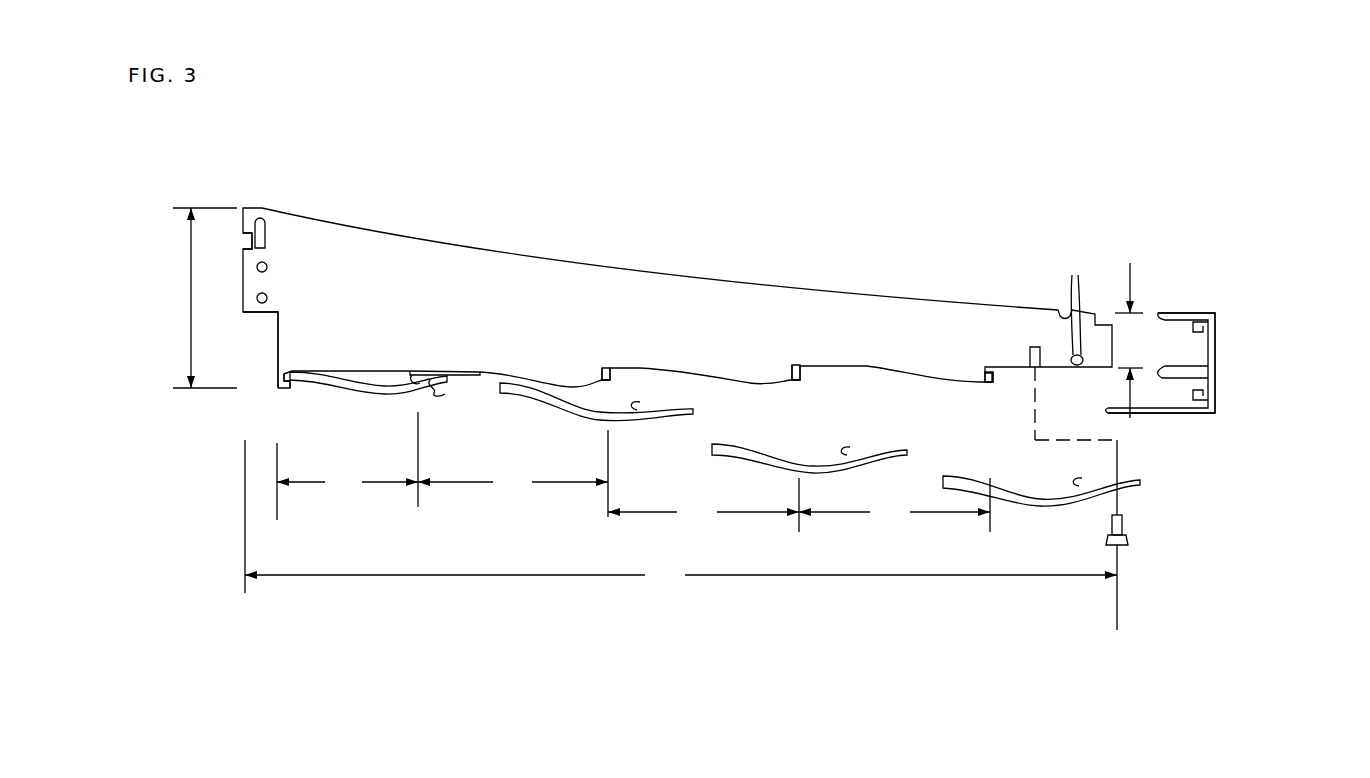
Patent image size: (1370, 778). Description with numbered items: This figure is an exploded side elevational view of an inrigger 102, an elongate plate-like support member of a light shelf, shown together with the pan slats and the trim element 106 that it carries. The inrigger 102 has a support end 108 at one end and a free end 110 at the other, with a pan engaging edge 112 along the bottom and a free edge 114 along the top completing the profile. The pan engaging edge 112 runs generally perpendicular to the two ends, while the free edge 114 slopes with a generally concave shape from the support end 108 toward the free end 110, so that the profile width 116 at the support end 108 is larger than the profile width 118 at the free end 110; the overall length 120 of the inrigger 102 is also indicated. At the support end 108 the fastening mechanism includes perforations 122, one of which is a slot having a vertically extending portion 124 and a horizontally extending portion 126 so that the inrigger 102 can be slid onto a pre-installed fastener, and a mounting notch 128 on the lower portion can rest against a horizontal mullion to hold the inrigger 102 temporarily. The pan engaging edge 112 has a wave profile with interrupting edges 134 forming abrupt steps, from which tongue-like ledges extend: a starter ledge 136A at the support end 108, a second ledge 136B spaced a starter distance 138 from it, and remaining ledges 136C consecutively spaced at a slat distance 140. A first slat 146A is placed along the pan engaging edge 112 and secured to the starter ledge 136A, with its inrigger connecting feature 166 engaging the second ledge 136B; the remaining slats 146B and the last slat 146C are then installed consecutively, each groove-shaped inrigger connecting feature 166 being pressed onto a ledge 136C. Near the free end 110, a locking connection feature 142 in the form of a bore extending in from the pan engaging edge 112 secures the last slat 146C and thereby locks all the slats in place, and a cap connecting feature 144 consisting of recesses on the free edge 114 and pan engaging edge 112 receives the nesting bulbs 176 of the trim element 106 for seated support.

The inrigger 102 is at (700, 170).
The trim element 106 is at (1243, 352).
The support end 108 is at (165, 297).
The free end 110 is at (1237, 297).
The pan engaging edge 112 is at (732, 388).
The free edge 114 is at (694, 278).
The profile width at the support end 116 is at (188, 333).
The profile width at the free end 118 is at (1130, 342).
The length 120 is at (681, 535).
The perforations 122 is at (280, 293).
The vertically extending portion 124 is at (261, 230).
The horizontally extending portion 126 is at (253, 241).
The mounting notch 128 is at (259, 356).
The interrupting edges 134 is at (412, 372).
The starter tongue-like ledge 136A is at (285, 368).
The second tongue-like ledge 136B is at (415, 372).
The remaining tongue-like ledges 136C is at (609, 374).
The starter distance 138 is at (347, 466).
The slat distance 140 is at (704, 481).
The locking connection feature 142 is at (1035, 347).
The cap connecting feature 144 is at (1077, 275).
The first slat 146A is at (342, 392).
The remaining slats 146B is at (547, 413).
The last slat 146C is at (1003, 476).
The inrigger connecting feature 166 is at (446, 386).
The nesting bulbs 176 is at (1165, 320).